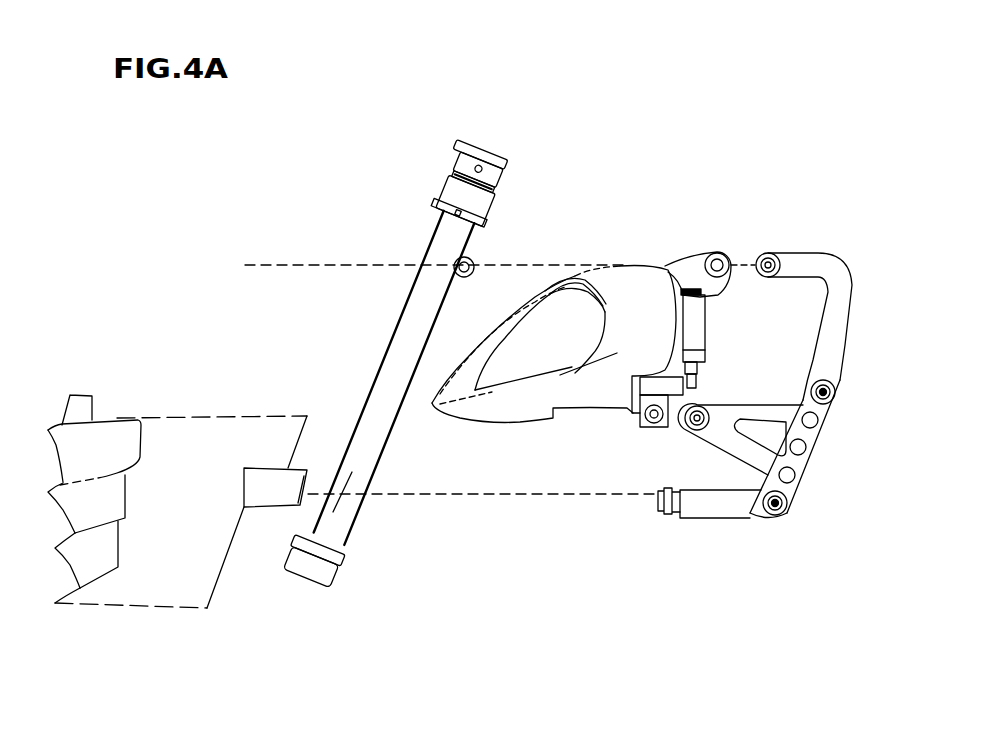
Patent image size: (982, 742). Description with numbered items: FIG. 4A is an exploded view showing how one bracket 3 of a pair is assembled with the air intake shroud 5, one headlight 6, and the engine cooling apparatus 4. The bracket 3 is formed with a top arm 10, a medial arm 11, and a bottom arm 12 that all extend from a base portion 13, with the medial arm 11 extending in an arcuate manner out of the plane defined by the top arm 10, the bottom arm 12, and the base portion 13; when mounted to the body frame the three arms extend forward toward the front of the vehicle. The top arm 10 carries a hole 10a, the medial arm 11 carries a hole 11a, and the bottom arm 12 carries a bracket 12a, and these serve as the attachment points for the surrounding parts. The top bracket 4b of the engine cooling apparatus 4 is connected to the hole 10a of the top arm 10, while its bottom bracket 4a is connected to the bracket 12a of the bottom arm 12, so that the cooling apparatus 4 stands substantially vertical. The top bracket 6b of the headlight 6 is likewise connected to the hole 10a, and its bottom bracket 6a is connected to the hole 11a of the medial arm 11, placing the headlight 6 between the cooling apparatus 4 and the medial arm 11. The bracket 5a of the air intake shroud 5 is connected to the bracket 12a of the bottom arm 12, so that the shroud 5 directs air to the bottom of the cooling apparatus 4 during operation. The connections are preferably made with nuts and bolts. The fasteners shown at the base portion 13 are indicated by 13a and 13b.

The bracket 3 is at (745, 386).
The engine cooling apparatus 4 is at (395, 340).
The bottom bracket 4a is at (335, 507).
The top bracket 4b is at (468, 257).
The air intake shroud 5 is at (150, 590).
The bracket 5a is at (287, 510).
The headlight 6 is at (630, 300).
The bottom bracket 6a is at (642, 418).
The top bracket 6b is at (718, 262).
The top arm 10 is at (813, 265).
The hole 10a is at (772, 255).
The medial arm 11 is at (737, 412).
The hole 11a is at (687, 427).
The bottom arm 12 is at (712, 512).
The bracket 12a is at (668, 512).
The base portion 13 is at (810, 437).
The upper plate bolt 13a is at (832, 395).
The lower plate bolt 13b is at (787, 512).